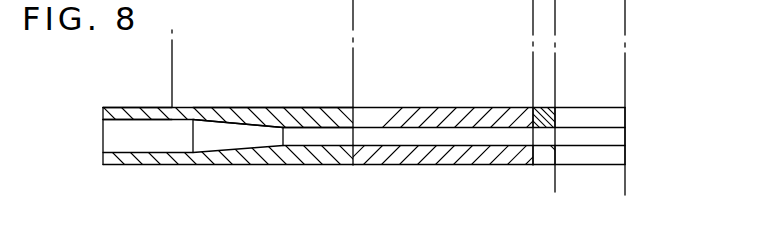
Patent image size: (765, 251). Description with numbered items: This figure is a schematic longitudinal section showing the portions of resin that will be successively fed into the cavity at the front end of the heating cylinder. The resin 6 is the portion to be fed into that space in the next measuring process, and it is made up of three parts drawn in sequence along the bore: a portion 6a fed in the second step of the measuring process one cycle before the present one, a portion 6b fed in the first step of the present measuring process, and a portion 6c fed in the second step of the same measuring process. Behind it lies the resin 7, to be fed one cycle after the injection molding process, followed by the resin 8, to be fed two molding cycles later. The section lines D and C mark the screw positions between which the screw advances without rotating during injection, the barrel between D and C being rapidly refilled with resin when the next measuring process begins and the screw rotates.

The resin portion 6 is at (246, 157).
The resin portion 6a is at (137, 107).
The resin portion 6b is at (228, 116).
The resin portion 6c is at (309, 117).
The resin portion 7 is at (431, 156).
The resin portion 8 is at (541, 157).
The position D is at (556, 89).
The position C is at (625, 88).